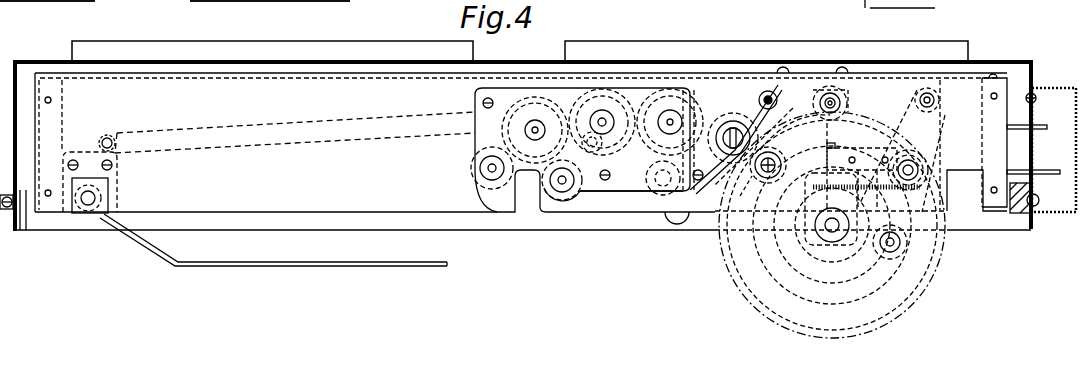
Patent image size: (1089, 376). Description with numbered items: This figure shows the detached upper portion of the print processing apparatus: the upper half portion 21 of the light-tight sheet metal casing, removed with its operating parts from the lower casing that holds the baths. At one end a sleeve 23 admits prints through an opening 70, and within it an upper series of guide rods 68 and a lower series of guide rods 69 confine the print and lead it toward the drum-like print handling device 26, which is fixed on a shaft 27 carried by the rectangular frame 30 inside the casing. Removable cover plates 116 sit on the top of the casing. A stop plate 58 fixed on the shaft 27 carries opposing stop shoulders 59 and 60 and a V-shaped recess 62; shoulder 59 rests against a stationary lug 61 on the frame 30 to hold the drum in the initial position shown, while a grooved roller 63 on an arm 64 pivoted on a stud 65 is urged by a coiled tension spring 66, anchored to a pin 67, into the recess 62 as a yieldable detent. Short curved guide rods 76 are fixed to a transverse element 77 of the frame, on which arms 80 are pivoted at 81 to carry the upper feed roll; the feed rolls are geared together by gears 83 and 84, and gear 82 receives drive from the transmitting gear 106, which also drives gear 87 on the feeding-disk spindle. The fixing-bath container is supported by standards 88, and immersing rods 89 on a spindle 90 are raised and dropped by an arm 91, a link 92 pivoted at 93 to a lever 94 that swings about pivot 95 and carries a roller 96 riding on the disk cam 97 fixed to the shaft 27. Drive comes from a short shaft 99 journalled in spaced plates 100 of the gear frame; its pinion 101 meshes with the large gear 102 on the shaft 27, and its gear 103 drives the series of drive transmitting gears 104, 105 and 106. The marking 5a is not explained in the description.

The sheet 5a is at (866, 8).
The upper half portion 21 is at (989, 56).
The sleeve 23 is at (1046, 88).
The print handling device 26 is at (788, 262).
The shaft 27 is at (833, 242).
The rectangular frame 30 is at (1008, 88).
The stop plate 58 is at (810, 277).
The stop shoulder 59 is at (812, 122).
The stop shoulder 60 is at (768, 243).
The stationary lug 61 is at (856, 131).
The V-shaped recess 62 is at (778, 178).
The grooved roller 63 is at (747, 178).
The arm 64 is at (792, 108).
The stud 65 is at (842, 103).
The coiled tension spring 66 is at (905, 190).
The pin 67 is at (918, 170).
The upper guide rods 68 is at (1044, 126).
The lower guide rods 69 is at (1058, 170).
The opening 70 is at (1037, 100).
The short curved guide rods 76 is at (677, 219).
The transverse element 77 is at (712, 80).
The arms 80 is at (613, 173).
The pivot 81 is at (648, 191).
The gear 82 is at (570, 214).
The gear 83 is at (560, 167).
The gear 84 is at (602, 110).
The gear 87 is at (480, 166).
The supporting standards 88 is at (96, 2).
The immersing rods 89 is at (299, 268).
The spindle 90 is at (110, 197).
The arm 91 is at (103, 143).
The link 92 is at (905, 92).
The pivot 93 is at (936, 100).
The lever 94 is at (941, 120).
The pivot 95 is at (942, 150).
The roller 96 is at (902, 242).
The disk cam 97 is at (851, 295).
The short shaft 99 is at (735, 120).
The spaced plates 100 is at (483, 118).
The pinion 101 is at (695, 190).
The large gear 102 is at (942, 250).
The gear 103 is at (760, 96).
The drive transmitting gear 104 is at (655, 100).
The drive transmitting gear 105 is at (585, 100).
The drive transmitting gear 106 is at (533, 98).
The cover plates 116 is at (370, 41).